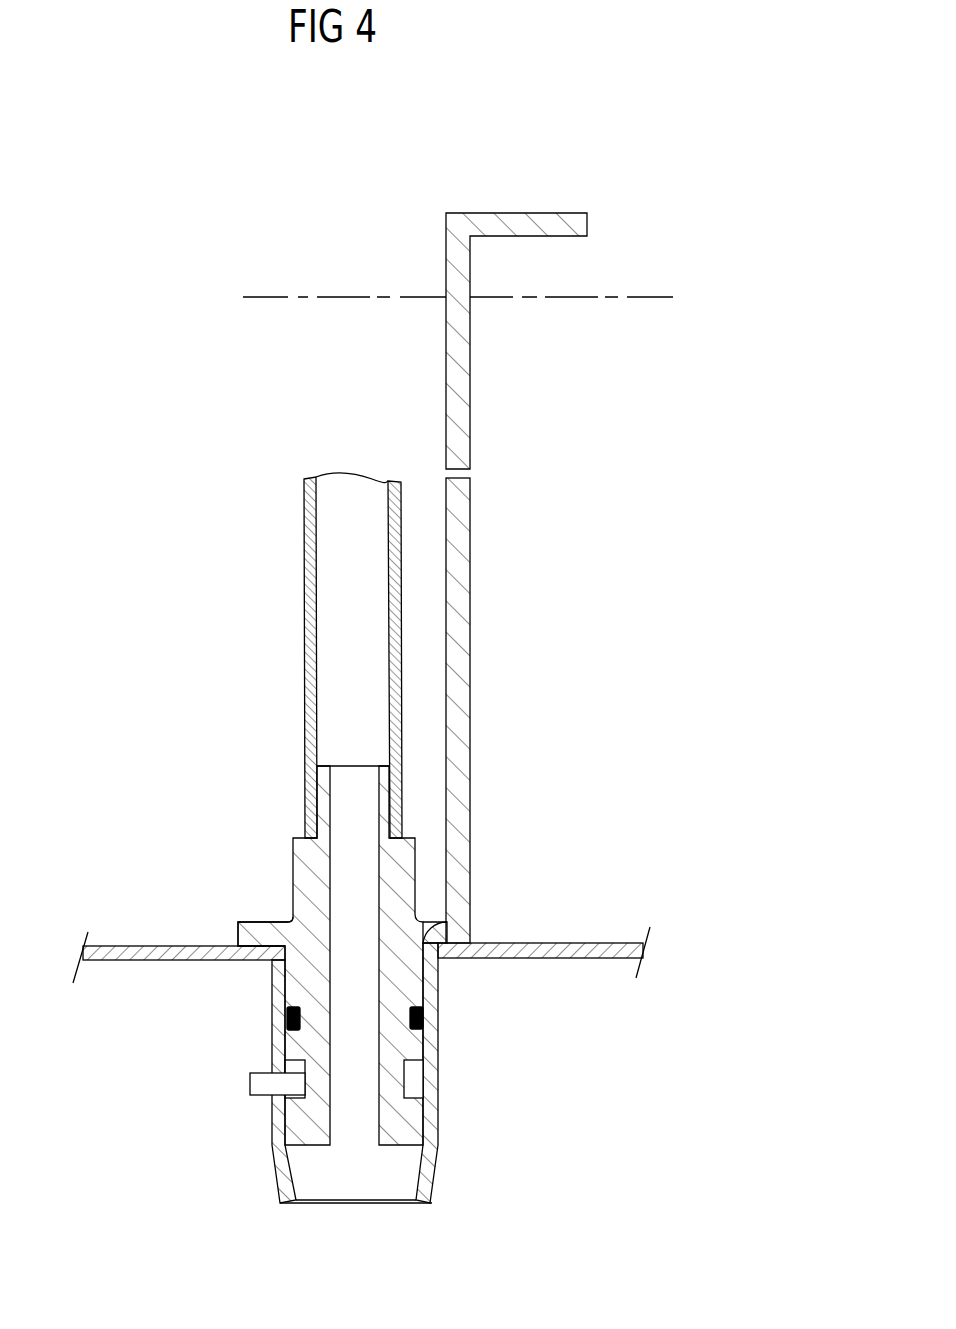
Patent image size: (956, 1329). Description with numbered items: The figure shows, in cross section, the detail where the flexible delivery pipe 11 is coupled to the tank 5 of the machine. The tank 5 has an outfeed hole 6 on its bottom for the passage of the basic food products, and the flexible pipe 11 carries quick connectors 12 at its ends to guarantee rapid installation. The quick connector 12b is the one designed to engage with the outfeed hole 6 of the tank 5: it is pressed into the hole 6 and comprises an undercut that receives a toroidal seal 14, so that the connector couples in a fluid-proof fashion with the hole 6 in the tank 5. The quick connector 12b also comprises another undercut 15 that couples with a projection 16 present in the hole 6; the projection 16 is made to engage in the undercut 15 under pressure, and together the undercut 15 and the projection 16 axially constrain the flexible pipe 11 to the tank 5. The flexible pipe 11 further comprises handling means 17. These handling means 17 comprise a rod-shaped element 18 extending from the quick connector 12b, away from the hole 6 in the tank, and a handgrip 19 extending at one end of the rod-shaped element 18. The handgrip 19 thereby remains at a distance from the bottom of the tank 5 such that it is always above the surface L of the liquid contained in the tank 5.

The tank 5 is at (112, 946).
The outfeed hole 6 is at (470, 927).
The flexible delivery pipe 11 is at (303, 508).
The quick connector 12 is at (412, 826).
The quick connector 12b is at (257, 921).
The toroidal seal 14 is at (287, 1017).
The undercut 15 is at (415, 1080).
The projection 16 is at (257, 1086).
The handling means 17 is at (473, 514).
The rod-shaped element 18 is at (471, 623).
The handgrip 19 is at (515, 213).
The surface of the liquid L is at (307, 297).